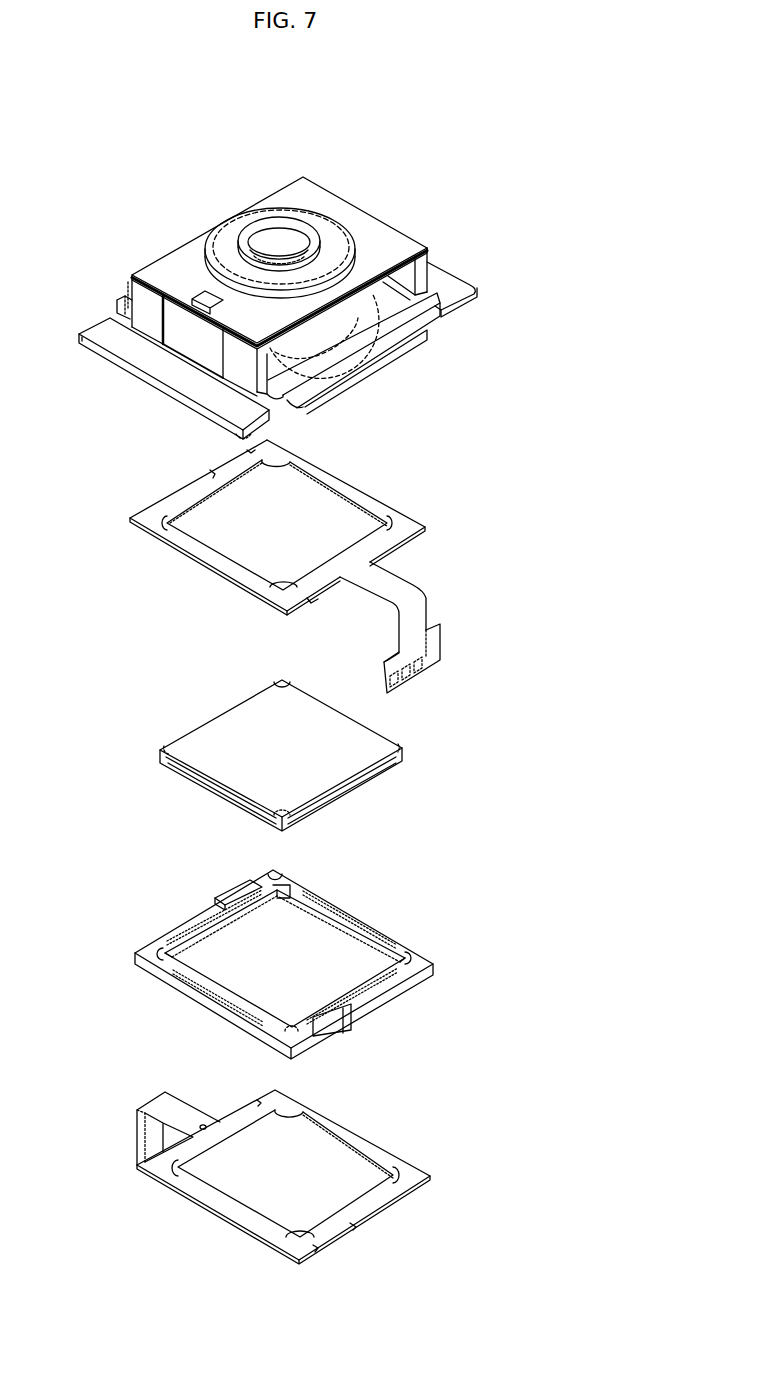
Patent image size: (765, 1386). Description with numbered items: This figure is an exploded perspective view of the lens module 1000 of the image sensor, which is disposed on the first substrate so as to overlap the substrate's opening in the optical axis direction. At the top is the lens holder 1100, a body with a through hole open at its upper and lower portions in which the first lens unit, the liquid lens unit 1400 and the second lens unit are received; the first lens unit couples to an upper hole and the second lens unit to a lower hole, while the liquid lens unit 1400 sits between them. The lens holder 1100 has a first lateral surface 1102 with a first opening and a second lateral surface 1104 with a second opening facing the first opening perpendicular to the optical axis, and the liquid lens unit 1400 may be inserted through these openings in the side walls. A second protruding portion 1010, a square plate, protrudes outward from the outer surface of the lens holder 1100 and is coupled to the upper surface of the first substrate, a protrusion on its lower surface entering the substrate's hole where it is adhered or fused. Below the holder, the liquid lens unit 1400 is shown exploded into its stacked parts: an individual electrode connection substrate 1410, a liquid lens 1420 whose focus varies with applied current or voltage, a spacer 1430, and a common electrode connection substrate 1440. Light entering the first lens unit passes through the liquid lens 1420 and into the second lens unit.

The lens module 1000 is at (123, 103).
The lens holder 1100 is at (387, 213).
The first lateral surface 1102 is at (143, 270).
The second lateral surface 1104 is at (427, 273).
The second protruding portion 1010 is at (147, 363).
The liquid lens unit 1400 is at (597, 555).
The individual electrode connection substrate 1410 is at (423, 531).
The liquid lens 1420 is at (405, 750).
The spacer 1430 is at (433, 960).
The common electrode connection substrate 1440 is at (429, 1173).